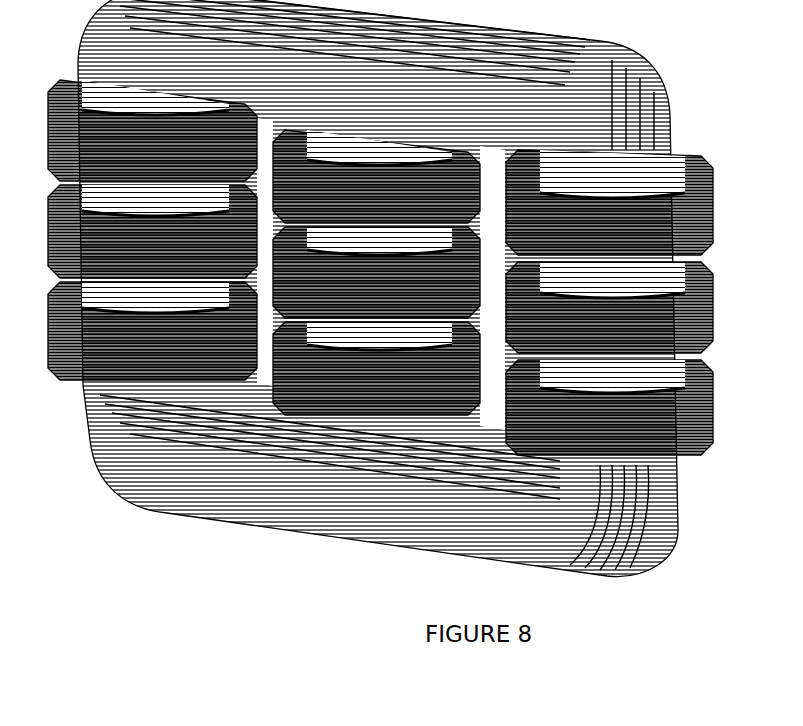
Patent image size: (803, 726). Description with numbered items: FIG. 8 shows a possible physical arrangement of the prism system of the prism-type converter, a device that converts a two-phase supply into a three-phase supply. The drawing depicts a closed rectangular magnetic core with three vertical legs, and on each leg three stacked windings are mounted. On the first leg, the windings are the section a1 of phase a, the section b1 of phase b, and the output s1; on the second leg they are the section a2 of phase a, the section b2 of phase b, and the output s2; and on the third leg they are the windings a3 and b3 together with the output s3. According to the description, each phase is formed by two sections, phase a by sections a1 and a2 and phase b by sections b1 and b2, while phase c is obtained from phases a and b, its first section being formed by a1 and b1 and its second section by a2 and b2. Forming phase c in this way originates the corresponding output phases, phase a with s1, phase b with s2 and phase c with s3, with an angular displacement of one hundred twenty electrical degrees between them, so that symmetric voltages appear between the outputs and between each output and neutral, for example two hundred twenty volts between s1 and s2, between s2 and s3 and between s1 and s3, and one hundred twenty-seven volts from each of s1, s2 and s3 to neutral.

The three-phase magnetic core is at (378, 288).
The section a1 of phase a a1 is at (152, 130).
The section b1 of phase b b1 is at (152, 231).
The output s1 is at (152, 331).
The section a2 of phase a a2 is at (376, 176).
The section b2 of phase b b2 is at (376, 272).
The output s2 is at (376, 368).
The phase-A winding on third leg a3 is at (609, 204).
The phase-B winding on third leg b3 is at (609, 307).
The output s3 is at (609, 407).